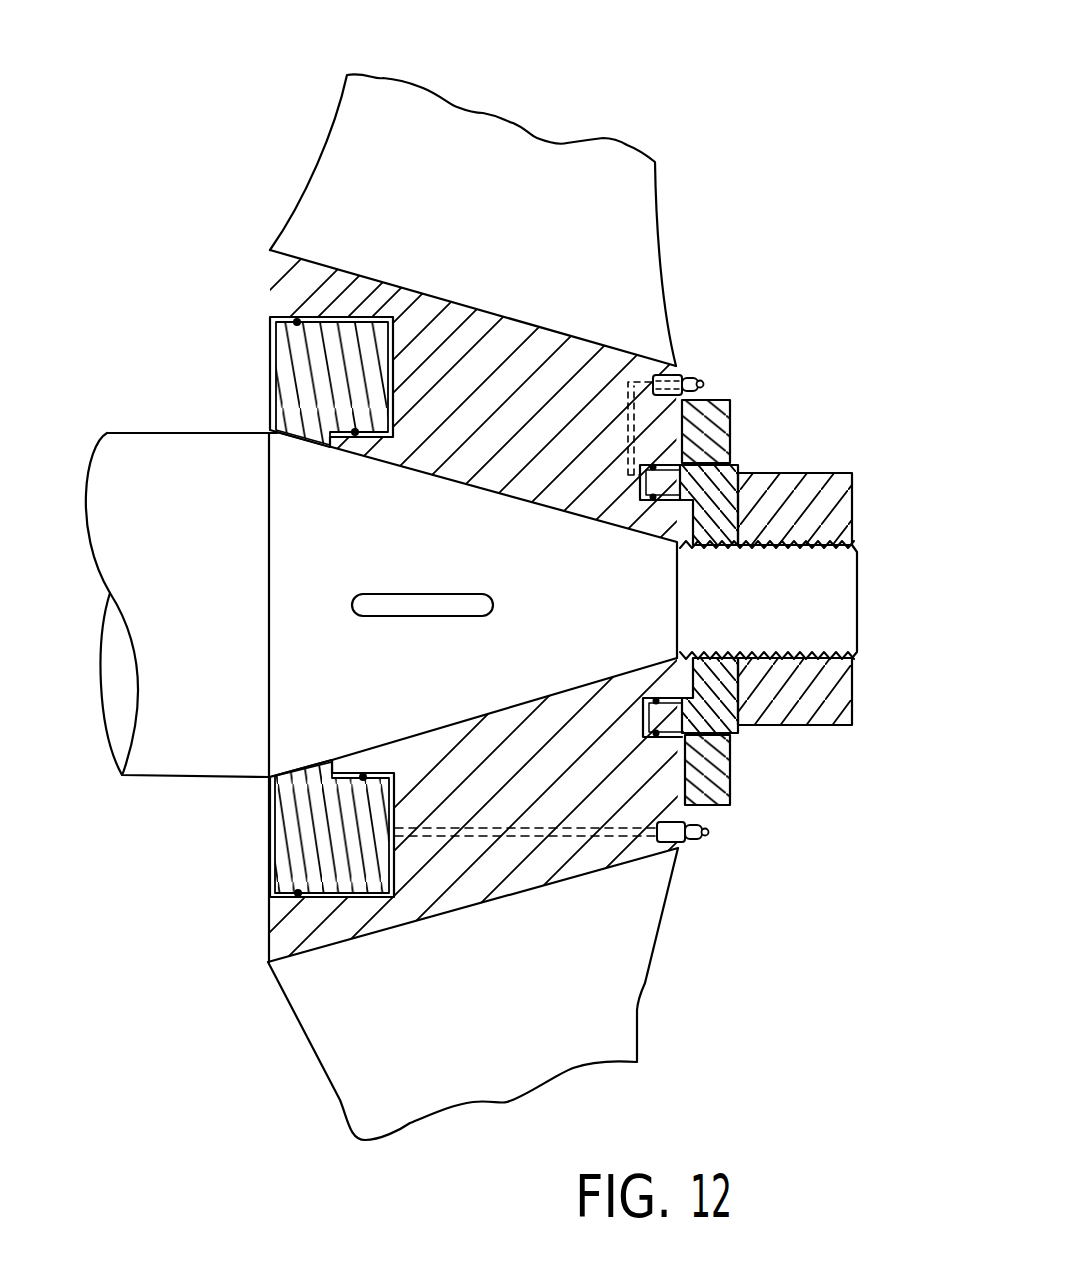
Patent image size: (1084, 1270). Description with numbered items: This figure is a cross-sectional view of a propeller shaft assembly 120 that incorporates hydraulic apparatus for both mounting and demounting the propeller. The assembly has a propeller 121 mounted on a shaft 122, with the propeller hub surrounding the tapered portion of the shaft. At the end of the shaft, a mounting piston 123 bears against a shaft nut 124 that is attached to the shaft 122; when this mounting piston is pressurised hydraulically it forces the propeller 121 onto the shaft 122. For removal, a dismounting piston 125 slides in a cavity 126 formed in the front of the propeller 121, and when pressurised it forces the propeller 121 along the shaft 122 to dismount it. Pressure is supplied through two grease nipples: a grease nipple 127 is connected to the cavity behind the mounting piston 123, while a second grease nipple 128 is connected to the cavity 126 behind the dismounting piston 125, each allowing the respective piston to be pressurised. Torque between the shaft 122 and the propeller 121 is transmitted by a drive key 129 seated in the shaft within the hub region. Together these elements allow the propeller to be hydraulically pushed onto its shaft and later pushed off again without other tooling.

The propeller shaft assembly 120 is at (577, 107).
The propeller 121 is at (499, 366).
The shaft 122 is at (502, 786).
The mounting piston 123 is at (738, 465).
The shaft nut 124 is at (805, 716).
The dismounting piston 125 is at (282, 378).
The cavity 126 is at (315, 318).
The grease nipple 127 is at (703, 382).
The grease nipple 128 is at (708, 831).
The drive key 129 is at (387, 593).